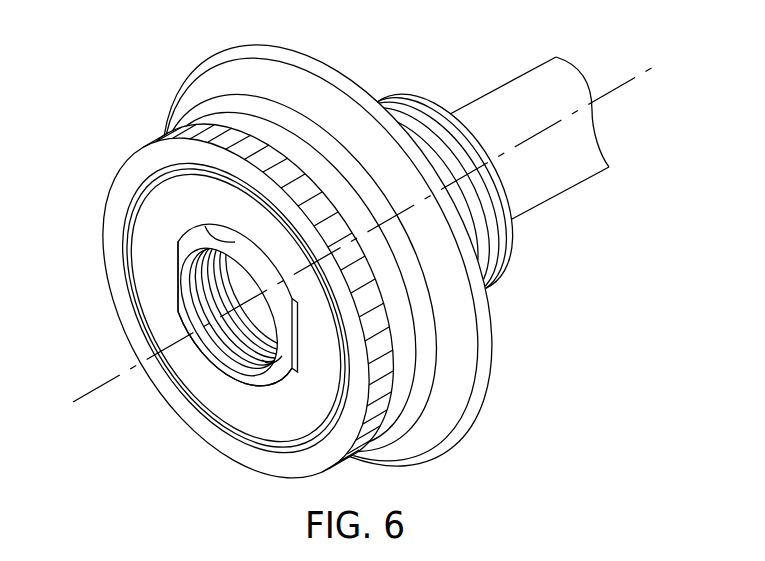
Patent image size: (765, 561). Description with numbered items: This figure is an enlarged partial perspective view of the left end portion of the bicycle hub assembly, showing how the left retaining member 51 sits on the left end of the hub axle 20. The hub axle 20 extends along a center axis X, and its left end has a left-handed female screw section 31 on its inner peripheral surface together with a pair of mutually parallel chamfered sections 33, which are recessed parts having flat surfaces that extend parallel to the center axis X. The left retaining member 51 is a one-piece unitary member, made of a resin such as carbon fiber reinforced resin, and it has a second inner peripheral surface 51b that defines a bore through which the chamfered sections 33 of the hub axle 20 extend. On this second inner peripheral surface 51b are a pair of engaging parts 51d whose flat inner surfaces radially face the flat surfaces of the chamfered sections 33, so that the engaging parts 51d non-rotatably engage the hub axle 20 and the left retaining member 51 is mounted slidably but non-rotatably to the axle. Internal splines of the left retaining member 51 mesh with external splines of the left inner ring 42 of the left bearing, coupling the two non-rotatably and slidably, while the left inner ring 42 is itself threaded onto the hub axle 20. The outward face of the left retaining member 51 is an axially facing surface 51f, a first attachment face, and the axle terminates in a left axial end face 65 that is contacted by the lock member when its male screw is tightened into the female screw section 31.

The left retaining member 51 is at (212, 52).
The axially facing surface 51f is at (157, 209).
The second inner peripheral surface 51b is at (226, 234).
The chamfered sections 33 is at (169, 262).
The female screw section 31 is at (200, 353).
The engaging parts 51d is at (282, 340).
The left axial end face 65 is at (228, 380).
The left inner ring 42 is at (433, 93).
The hub axle 20 is at (581, 199).
The center axis X is at (634, 74).